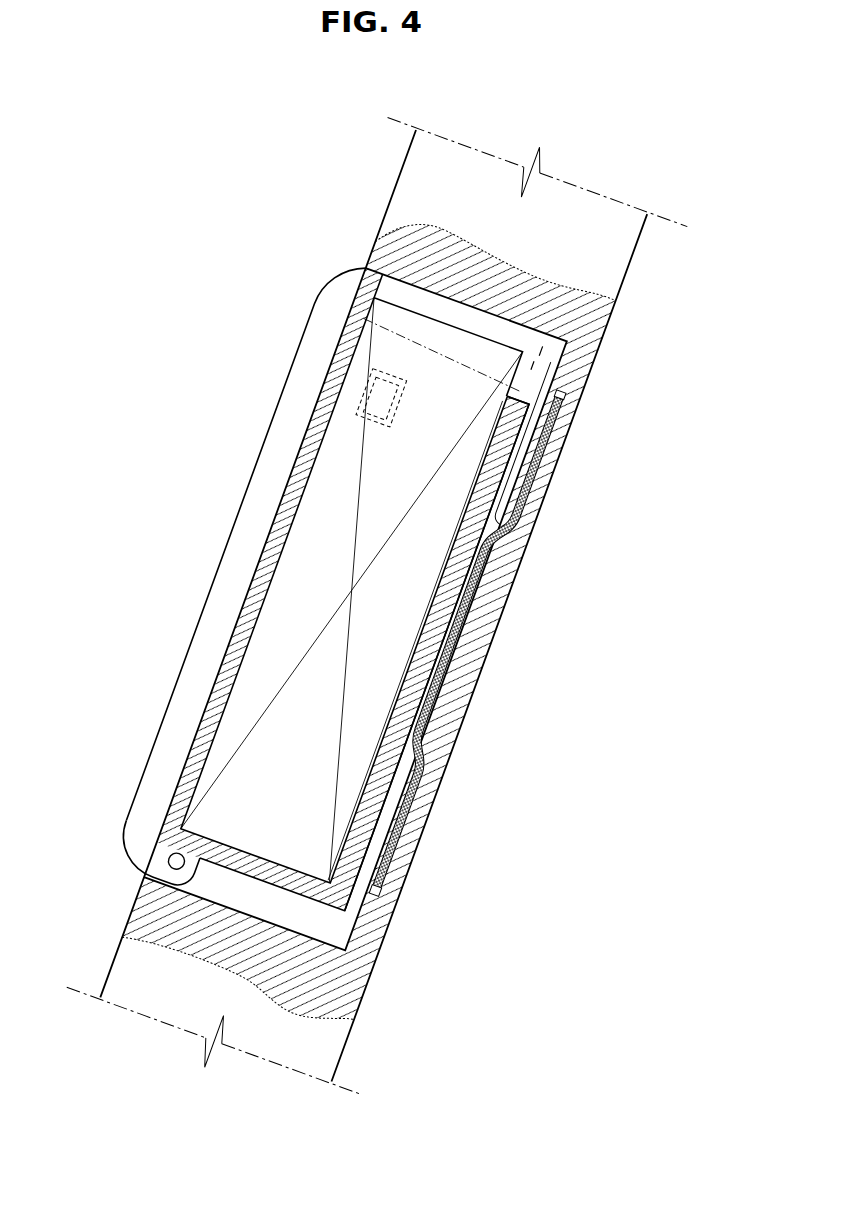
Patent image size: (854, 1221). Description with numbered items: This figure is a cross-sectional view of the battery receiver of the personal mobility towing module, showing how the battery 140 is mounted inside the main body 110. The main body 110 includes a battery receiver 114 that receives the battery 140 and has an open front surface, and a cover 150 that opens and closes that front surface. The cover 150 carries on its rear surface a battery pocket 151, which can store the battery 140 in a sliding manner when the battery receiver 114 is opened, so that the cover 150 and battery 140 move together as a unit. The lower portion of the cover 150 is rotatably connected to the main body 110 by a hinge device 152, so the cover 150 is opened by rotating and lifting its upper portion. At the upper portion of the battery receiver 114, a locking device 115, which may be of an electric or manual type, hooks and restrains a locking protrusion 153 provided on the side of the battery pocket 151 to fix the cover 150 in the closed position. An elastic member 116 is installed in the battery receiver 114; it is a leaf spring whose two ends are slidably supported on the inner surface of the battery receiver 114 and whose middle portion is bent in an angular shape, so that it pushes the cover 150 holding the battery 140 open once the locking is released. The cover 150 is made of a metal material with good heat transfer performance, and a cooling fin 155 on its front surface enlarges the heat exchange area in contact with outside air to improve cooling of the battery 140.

The main body 110 is at (608, 267).
The battery receiver 114 is at (543, 360).
The locking device 115 is at (373, 407).
The elastic member 116 is at (447, 674).
The battery 140 is at (432, 306).
The cover 150 is at (166, 666).
The battery pocket 151 is at (451, 613).
The hinge device 152 is at (168, 862).
The locking protrusion 153 is at (380, 397).
The cooling fin 155 is at (228, 574).